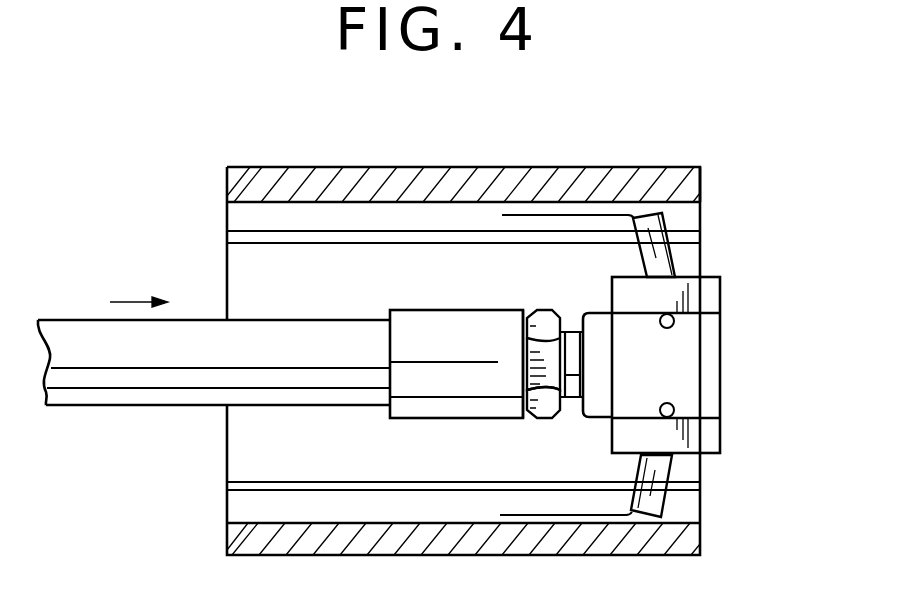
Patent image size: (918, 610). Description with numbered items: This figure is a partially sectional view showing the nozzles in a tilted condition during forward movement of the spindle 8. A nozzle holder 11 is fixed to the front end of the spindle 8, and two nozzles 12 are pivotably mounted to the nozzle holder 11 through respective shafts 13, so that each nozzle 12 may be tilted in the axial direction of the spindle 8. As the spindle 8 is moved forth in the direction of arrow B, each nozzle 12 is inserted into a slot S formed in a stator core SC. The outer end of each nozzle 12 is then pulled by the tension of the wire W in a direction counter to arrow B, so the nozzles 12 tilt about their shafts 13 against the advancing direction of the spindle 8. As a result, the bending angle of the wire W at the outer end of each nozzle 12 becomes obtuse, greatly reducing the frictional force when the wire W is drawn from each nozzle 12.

The spindle 8 is at (142, 396).
The nozzle holder 11 is at (706, 362).
The nozzle 12 is at (675, 262).
The shaft 13 is at (674, 321).
The slot S is at (395, 214).
The wire W is at (562, 214).
The stator core SC is at (700, 183).
The arrow B is at (151, 302).